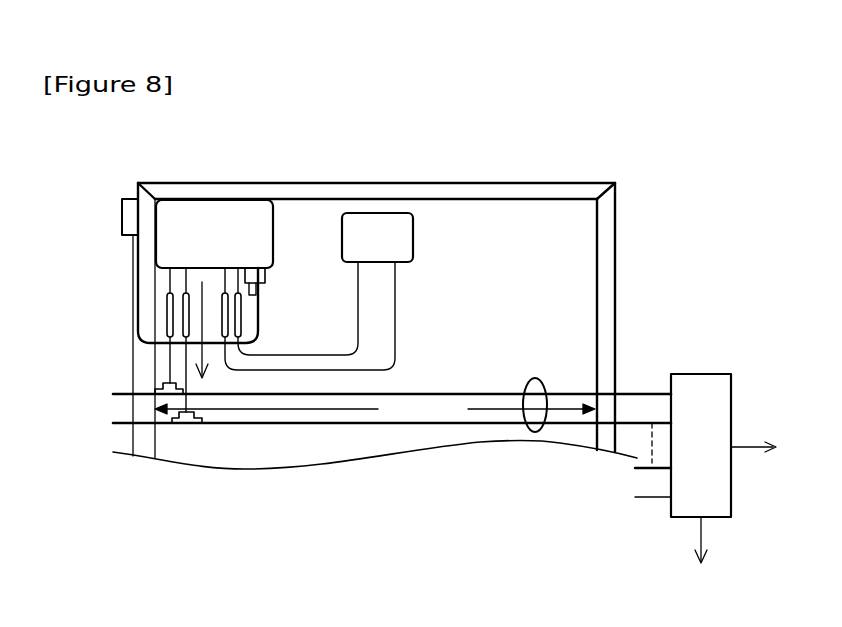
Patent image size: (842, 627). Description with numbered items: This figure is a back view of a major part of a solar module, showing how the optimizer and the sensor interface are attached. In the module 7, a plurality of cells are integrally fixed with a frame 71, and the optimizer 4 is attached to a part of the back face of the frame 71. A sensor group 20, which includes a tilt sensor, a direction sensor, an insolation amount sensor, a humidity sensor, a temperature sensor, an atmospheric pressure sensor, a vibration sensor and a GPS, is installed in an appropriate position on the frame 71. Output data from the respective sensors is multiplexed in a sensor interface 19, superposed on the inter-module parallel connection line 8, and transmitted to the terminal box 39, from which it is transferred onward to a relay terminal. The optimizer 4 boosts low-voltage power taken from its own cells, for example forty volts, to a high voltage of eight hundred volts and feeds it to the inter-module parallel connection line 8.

The sensor group 20 is at (125, 198).
The optimizer 4 is at (213, 212).
The sensor interface 19 is at (359, 225).
The module 7 is at (495, 232).
The frame 71 is at (615, 277).
The terminal box 39 is at (702, 374).
The inter-module parallel connection line 8 is at (535, 432).